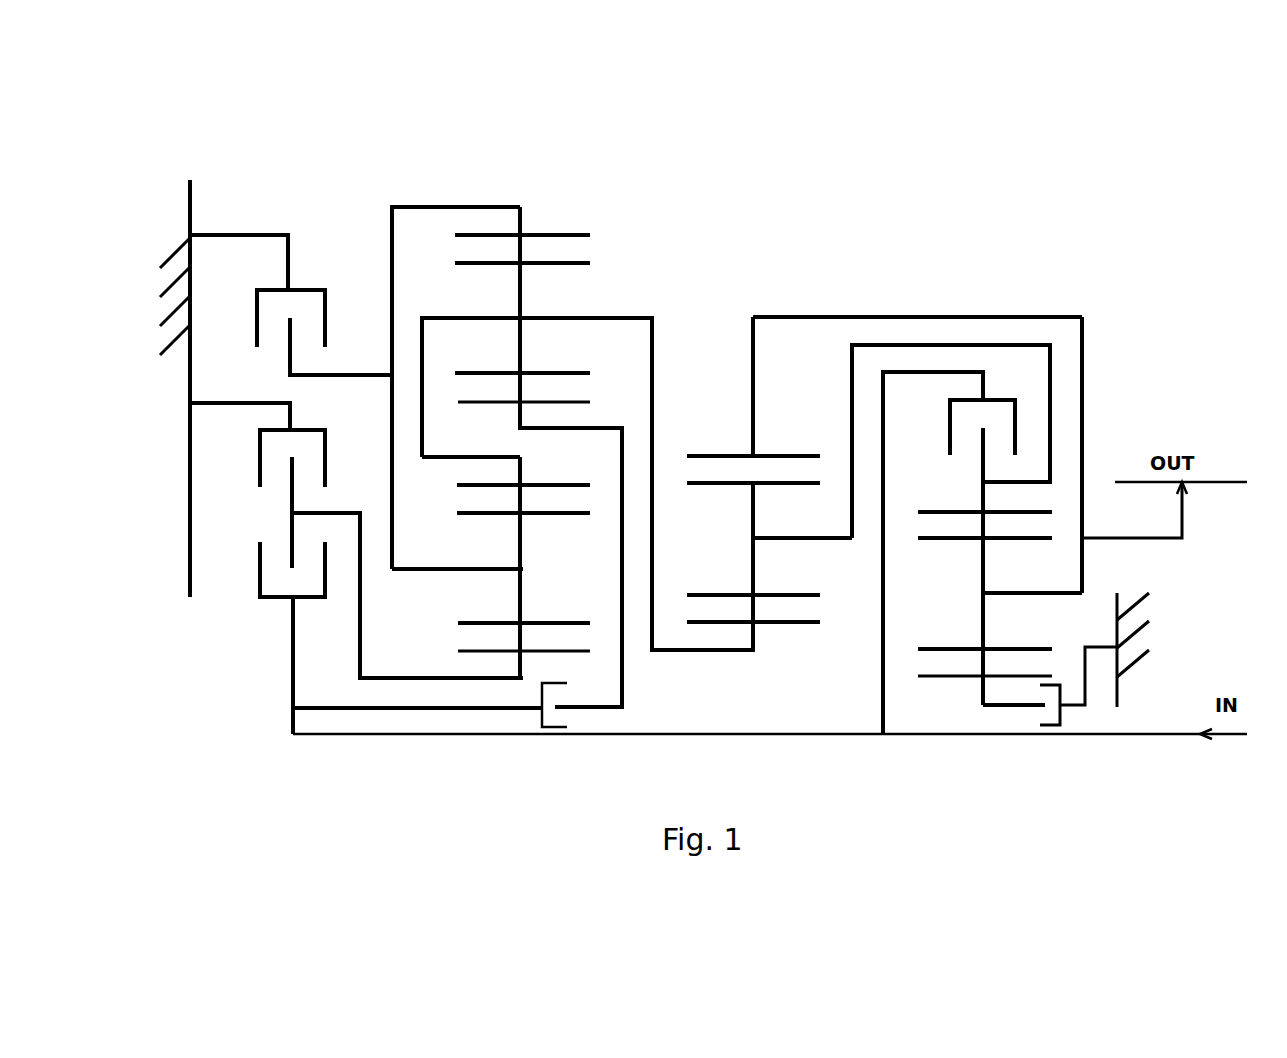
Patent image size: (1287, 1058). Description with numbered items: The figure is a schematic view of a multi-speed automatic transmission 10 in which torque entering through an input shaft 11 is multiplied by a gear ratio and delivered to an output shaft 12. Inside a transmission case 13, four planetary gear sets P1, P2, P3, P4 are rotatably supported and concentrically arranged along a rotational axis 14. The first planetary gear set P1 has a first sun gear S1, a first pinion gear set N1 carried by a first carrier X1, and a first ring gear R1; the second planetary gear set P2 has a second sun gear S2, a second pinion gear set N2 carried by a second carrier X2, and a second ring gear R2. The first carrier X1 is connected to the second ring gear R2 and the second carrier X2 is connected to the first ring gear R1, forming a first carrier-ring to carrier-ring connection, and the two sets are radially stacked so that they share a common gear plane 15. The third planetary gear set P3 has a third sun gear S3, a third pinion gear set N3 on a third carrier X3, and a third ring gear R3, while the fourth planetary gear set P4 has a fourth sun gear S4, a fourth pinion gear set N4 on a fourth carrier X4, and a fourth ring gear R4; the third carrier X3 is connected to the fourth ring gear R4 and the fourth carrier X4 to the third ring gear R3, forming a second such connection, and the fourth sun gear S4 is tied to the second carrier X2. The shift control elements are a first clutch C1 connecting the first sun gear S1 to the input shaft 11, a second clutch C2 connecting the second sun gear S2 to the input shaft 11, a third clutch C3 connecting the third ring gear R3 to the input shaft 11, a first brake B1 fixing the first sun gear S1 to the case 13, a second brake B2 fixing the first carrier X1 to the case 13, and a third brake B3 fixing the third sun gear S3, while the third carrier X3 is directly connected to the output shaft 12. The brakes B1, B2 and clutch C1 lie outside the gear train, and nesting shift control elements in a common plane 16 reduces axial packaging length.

The multi-speed automatic transmission 10 is at (890, 282).
The input shaft 11 is at (770, 746).
The output shaft 12 is at (1149, 510).
The transmission case 13 is at (172, 222).
The rotational axis 14 is at (290, 734).
The common gear plane 15 is at (520, 207).
The plane 16 is at (288, 235).
The first planetary gear set P1 is at (494, 628).
The second planetary gear set P2 is at (572, 393).
The third planetary gear set P3 is at (962, 638).
The fourth planetary gear set P4 is at (867, 441).
The first ring gear R1 is at (532, 486).
The second ring gear R2 is at (540, 245).
The third ring gear R3 is at (976, 511).
The fourth ring gear R4 is at (744, 456).
The first pinion gear set N1 is at (536, 608).
The second pinion gear set N2 is at (541, 376).
The third pinion gear set N3 is at (977, 635).
The fourth pinion gear set N4 is at (747, 582).
The first sun gear S1 is at (535, 637).
The second sun gear S2 is at (541, 403).
The third sun gear S3 is at (977, 692).
The fourth sun gear S4 is at (747, 635).
The first carrier X1 is at (445, 554).
The second carrier X2 is at (454, 336).
The third carrier X3 is at (996, 579).
The fourth carrier X4 is at (771, 521).
The first brake B1 is at (257, 485).
The second brake B2 is at (297, 332).
The third brake B3 is at (1080, 710).
The first clutch C1 is at (363, 595).
The second clutch C2 is at (572, 699).
The third clutch C3 is at (951, 539).